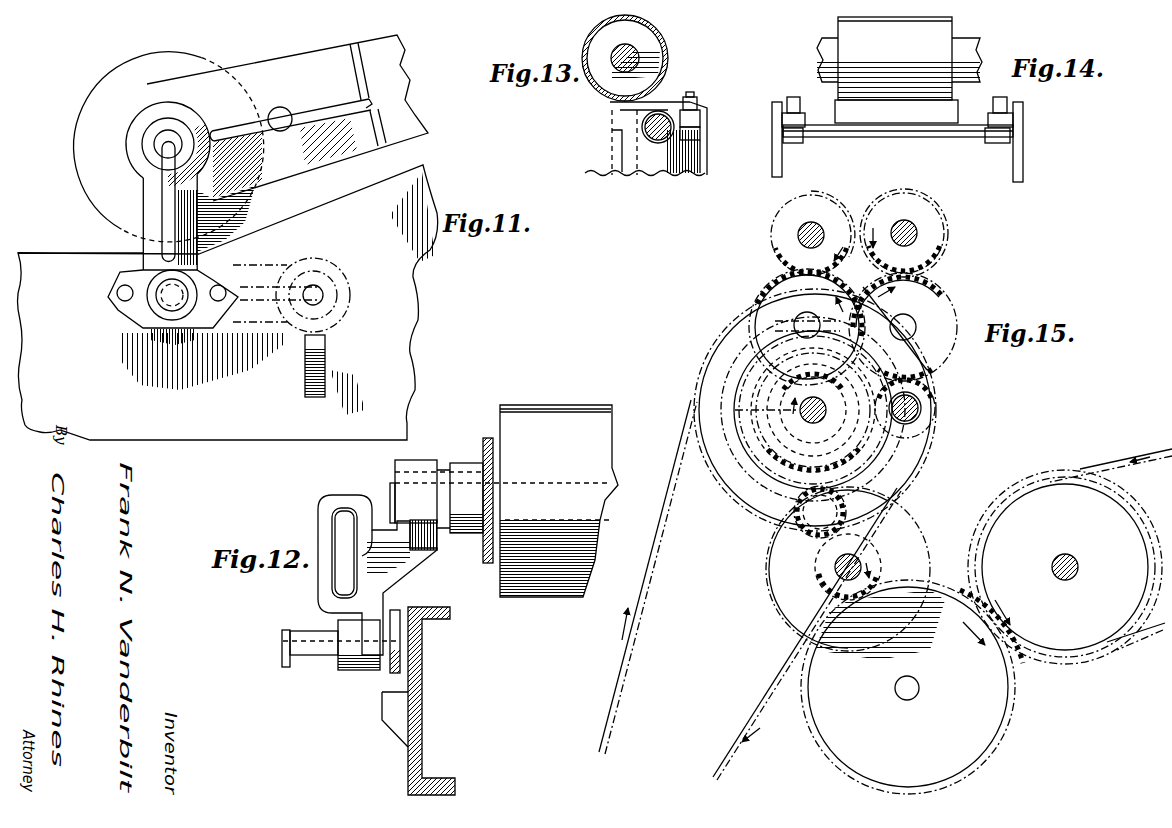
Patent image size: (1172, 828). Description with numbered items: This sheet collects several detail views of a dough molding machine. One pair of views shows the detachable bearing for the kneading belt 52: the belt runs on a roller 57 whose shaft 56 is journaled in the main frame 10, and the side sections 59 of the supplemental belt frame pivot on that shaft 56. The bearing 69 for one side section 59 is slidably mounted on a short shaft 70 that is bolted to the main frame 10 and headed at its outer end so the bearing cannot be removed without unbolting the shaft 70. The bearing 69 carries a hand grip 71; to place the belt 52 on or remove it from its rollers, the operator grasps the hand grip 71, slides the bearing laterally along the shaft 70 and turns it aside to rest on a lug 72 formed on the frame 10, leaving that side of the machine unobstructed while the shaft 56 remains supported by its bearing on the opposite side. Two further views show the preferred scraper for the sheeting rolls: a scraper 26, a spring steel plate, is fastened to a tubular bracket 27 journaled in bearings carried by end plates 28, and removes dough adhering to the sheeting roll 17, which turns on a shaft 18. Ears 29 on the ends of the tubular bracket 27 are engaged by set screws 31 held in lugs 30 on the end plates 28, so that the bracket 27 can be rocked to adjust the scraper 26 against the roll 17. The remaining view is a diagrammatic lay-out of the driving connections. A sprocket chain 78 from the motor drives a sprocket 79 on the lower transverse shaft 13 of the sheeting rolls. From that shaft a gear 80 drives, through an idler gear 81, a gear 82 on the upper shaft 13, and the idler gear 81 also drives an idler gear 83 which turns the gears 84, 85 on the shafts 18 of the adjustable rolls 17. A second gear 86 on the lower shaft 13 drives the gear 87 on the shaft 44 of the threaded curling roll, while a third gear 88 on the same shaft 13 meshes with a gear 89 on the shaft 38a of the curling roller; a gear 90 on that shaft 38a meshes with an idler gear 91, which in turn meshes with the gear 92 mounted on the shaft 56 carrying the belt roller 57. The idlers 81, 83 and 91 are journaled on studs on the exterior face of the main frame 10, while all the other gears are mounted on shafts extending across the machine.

In FIG. 11, the main frame 10 is at (228, 302).
In FIG. 12, the main frame 10 is at (423, 673).
In FIG. 15, the transverse shaft 13 is at (818, 423).
In FIG. 13, the sheeting roll 17 is at (656, 31).
In FIG. 14, the sheeting roll 17 is at (895, 58).
In FIG. 13, the shaft 18 is at (639, 60).
In FIG. 14, the shaft 18 is at (818, 45).
In FIG. 15, the shaft 18 is at (800, 228).
In FIG. 13, the scraper 26 is at (662, 117).
In FIG. 14, the scraper 26 is at (920, 110).
In FIG. 13, the tubular bracket 27 is at (663, 142).
In FIG. 14, the tubular bracket 27 is at (836, 138).
In FIG. 13, the end plate 28 is at (703, 162).
In FIG. 14, the end plate 28 is at (776, 150).
In FIG. 13, the ear 29 is at (700, 132).
In FIG. 14, the ear 29 is at (801, 143).
In FIG. 13, the lug 30 is at (700, 113).
In FIG. 14, the lug 30 is at (782, 119).
In FIG. 13, the set screw 31 is at (697, 100).
In FIG. 14, the set screw 31 is at (793, 96).
In FIG. 15, the shaft 38a is at (835, 578).
In FIG. 15, the shaft 44 is at (818, 521).
In FIG. 15, the belt 52 is at (1145, 642).
In FIG. 11, the shaft 56 is at (159, 131).
In FIG. 12, the shaft 56 is at (567, 481).
In FIG. 15, the shaft 56 is at (1073, 557).
In FIG. 11, the roller 57 is at (199, 55).
In FIG. 12, the roller 57 is at (561, 409).
In FIG. 15, the roller 57 is at (1148, 558).
In FIG. 11, the side section 59 is at (287, 143).
In FIG. 12, the side section 59 is at (488, 440).
In FIG. 11, the bearing 69 is at (190, 120).
In FIG. 12, the bearing 69 is at (426, 463).
In FIG. 11, the short shaft 70 is at (165, 306).
In FIG. 12, the short shaft 70 is at (312, 637).
In FIG. 11, the hand grip 71 is at (193, 240).
In FIG. 12, the hand grip 71 is at (322, 513).
In FIG. 11, the lug 72 is at (305, 370).
In FIG. 12, the lug 72 is at (392, 708).
In FIG. 15, the sprocket chain 78 is at (634, 646).
In FIG. 15, the sprocket 79 is at (714, 487).
In FIG. 15, the gear 80 is at (742, 412).
In FIG. 15, the idler gear 81 is at (775, 290).
In FIG. 15, the gear 82 is at (771, 237).
In FIG. 15, the idler gear 83 is at (945, 300).
In FIG. 15, the gear 84 is at (936, 236).
In FIG. 15, the gear 85 is at (936, 410).
In FIG. 15, the second gear 86 is at (754, 461).
In FIG. 15, the gear 87 is at (795, 507).
In FIG. 15, the third gear 88 is at (879, 469).
In FIG. 15, the gear 89 is at (916, 517).
In FIG. 15, the gear 90 is at (887, 560).
In FIG. 15, the idler gear 91 is at (972, 600).
In FIG. 15, the gear 92 is at (1012, 655).